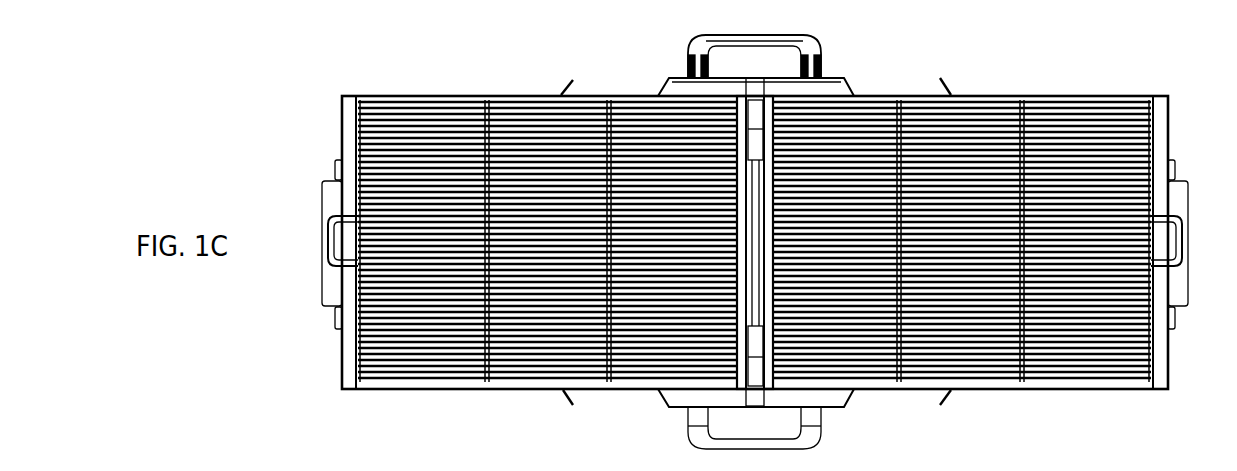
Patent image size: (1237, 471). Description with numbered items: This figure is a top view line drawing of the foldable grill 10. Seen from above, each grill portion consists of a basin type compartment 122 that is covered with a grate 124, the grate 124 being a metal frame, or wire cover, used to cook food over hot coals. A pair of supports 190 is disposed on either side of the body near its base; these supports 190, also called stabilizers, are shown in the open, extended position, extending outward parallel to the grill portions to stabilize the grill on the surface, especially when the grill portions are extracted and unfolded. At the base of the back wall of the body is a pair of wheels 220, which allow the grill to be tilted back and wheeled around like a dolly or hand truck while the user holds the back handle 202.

The foldable grill 10 is at (266, 316).
The basin type compartment 122 is at (343, 127).
The grate 124 is at (571, 248).
The supports 190 is at (557, 70).
The back handle 202 is at (689, 34).
The wheels 220 is at (815, 56).